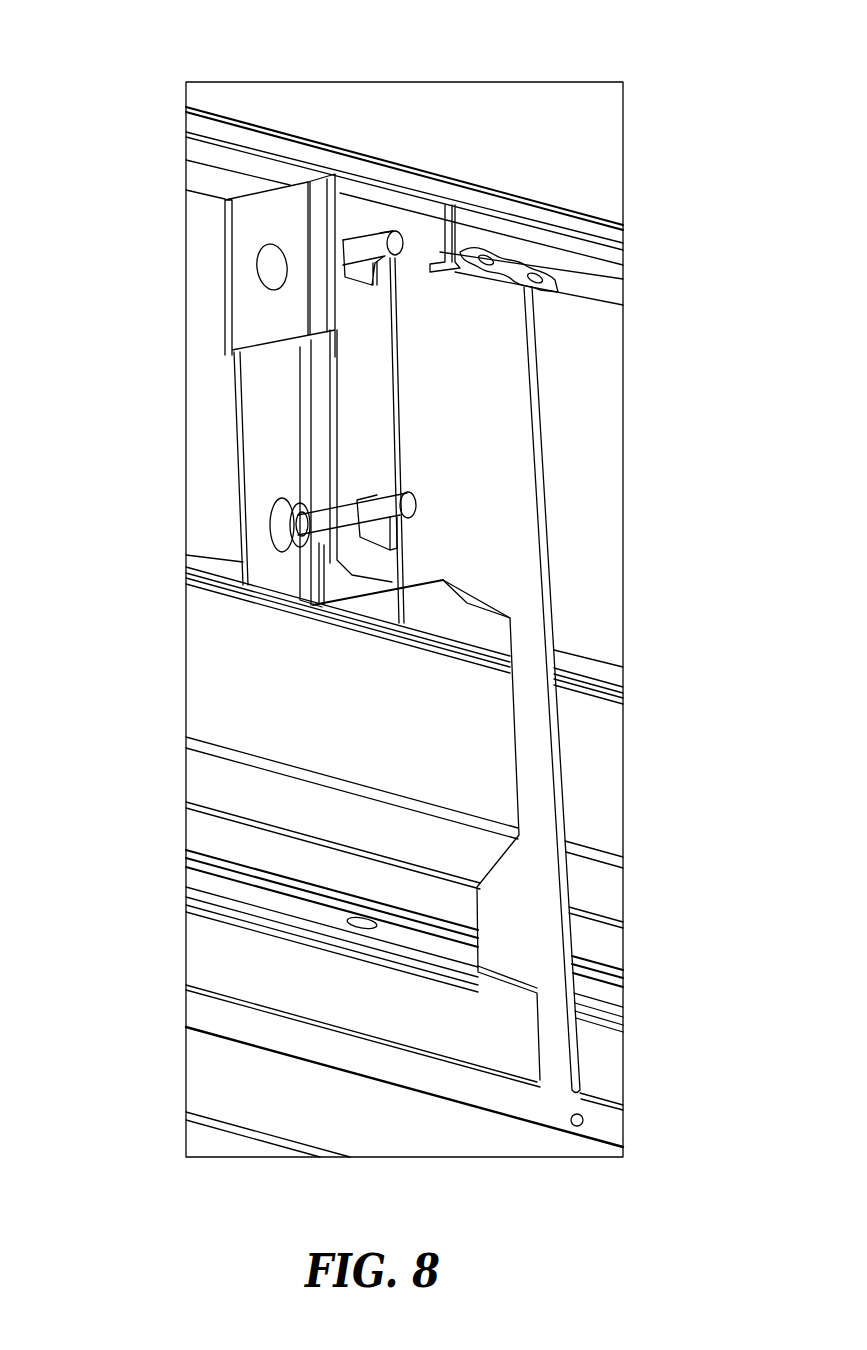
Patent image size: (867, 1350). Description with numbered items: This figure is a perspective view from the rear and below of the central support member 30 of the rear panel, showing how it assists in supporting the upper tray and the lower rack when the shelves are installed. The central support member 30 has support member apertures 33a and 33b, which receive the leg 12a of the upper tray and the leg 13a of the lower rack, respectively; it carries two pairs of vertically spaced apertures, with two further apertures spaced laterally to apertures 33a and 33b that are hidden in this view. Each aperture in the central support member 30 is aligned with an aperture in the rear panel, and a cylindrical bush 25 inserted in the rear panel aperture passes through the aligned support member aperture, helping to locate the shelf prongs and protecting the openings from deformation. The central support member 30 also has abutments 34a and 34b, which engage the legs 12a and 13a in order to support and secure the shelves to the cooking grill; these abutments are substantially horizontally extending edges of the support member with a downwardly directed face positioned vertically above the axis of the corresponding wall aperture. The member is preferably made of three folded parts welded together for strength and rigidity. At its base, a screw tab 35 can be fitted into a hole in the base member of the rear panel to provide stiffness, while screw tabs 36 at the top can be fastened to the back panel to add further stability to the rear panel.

The leg 12a is at (388, 231).
The leg 13a is at (417, 513).
The cylindrical bush 25 is at (270, 515).
The central support member 30 is at (642, 570).
The support member aperture 33a is at (263, 288).
The support member aperture 33b is at (285, 526).
The abutment 34a is at (350, 240).
The abutment 34b is at (367, 497).
The screw tab 35 is at (527, 902).
The screw tabs 36 is at (545, 291).